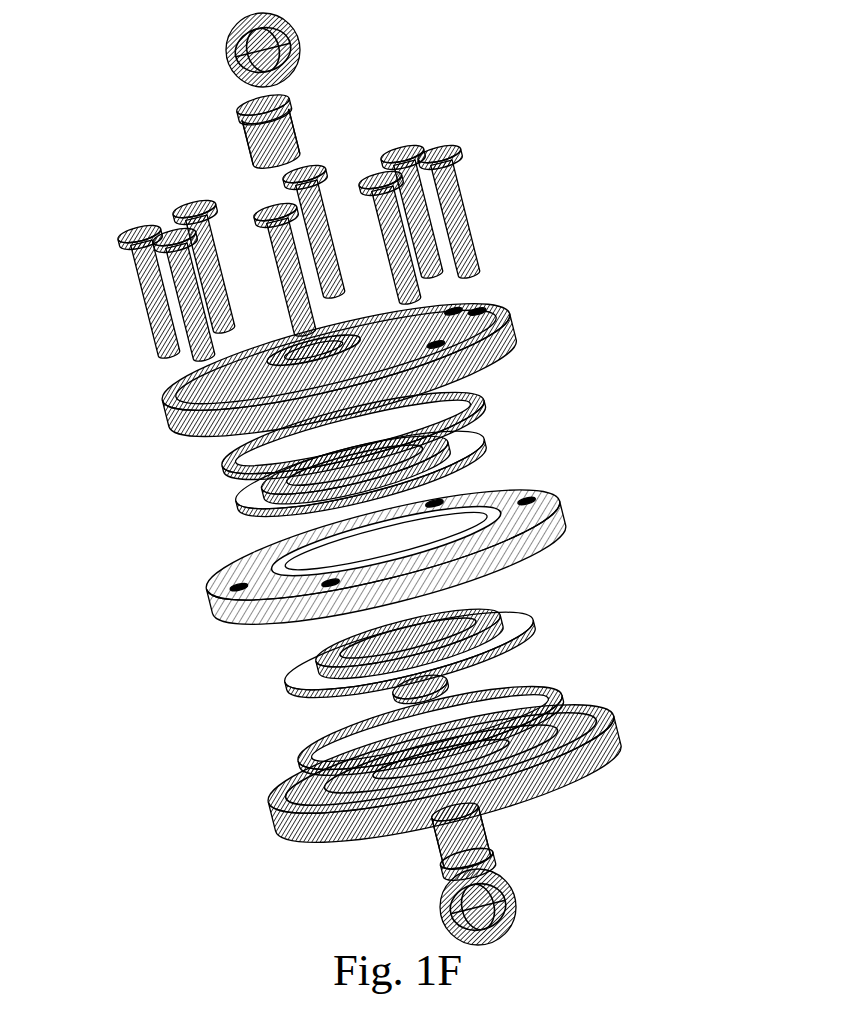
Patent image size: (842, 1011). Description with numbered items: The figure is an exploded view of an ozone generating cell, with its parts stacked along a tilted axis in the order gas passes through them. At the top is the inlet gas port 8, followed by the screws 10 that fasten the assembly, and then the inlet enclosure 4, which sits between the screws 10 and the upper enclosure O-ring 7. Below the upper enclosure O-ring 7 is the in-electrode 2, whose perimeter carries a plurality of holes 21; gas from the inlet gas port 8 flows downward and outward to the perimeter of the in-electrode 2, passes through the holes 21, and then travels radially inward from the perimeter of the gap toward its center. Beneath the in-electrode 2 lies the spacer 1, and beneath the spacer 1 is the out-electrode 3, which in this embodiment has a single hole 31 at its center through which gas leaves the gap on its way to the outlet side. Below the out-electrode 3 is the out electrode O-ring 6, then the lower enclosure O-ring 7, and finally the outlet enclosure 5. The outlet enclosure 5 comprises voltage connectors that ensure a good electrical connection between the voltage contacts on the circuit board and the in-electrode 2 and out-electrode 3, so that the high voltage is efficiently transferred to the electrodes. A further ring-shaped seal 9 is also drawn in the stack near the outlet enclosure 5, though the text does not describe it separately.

The spacer 1 is at (207, 590).
The in-electrode 2 is at (488, 444).
The out-electrode 3 is at (533, 632).
The inlet enclosure 4 is at (160, 428).
The outlet enclosure 5 is at (617, 742).
The out electrode O-ring 6 is at (392, 693).
The enclosure O-ring 7 is at (222, 467).
The inlet gas port 8 is at (287, 68).
The lower sealing ring 9 is at (300, 768).
The screws 10 is at (148, 237).
The holes 21 is at (437, 333).
The hole 31 is at (415, 626).